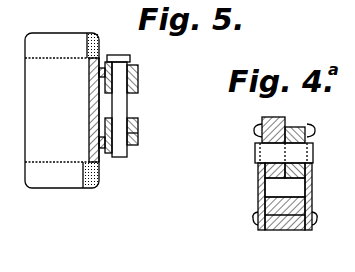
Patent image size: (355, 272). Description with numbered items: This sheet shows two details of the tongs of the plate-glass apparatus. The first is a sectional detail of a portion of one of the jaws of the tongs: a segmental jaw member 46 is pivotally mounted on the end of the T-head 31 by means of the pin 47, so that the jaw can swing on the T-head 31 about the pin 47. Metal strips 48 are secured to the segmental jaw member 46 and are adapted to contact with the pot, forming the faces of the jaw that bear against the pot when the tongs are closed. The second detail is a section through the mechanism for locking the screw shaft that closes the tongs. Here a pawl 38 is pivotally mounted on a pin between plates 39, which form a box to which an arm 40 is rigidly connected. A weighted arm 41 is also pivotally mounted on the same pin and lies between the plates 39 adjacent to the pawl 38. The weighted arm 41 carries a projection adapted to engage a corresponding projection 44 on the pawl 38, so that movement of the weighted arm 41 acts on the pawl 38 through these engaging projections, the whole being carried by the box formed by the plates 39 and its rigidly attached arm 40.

In FIG. 5, the segmental jaw member 46 is at (62, 110).
In FIG. 5, the metal strips 48 is at (62, 110).
In FIG. 5, the T-head 31 is at (138, 127).
In FIG. 5, the pin 47 is at (120, 100).
In FIG. 4A, the weighted arm 41 is at (287, 118).
In FIG. 4A, the plates 39 is at (315, 132).
In FIG. 4A, the projection 44 is at (313, 150).
In FIG. 4A, the pawl 38 is at (305, 172).
In FIG. 4A, the arm 40 is at (298, 208).